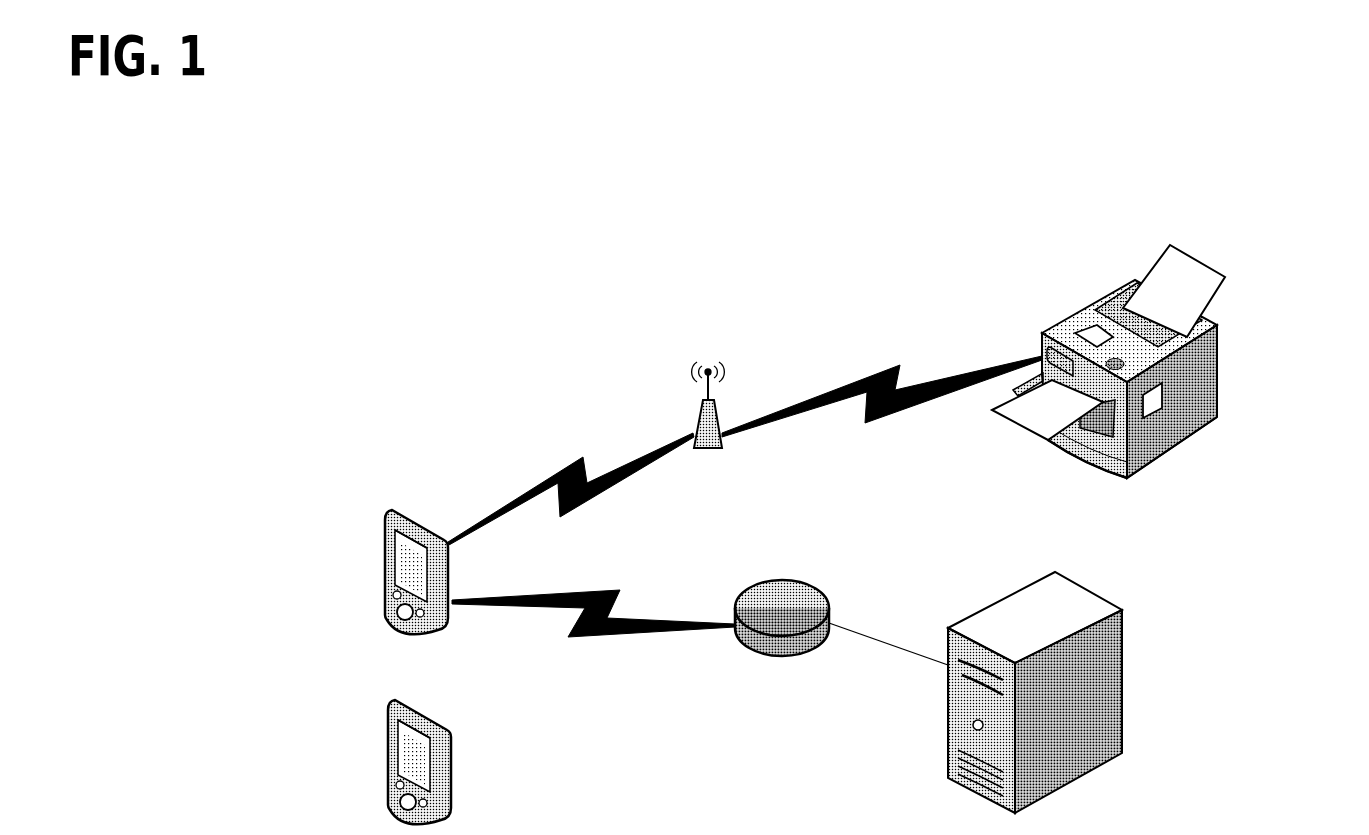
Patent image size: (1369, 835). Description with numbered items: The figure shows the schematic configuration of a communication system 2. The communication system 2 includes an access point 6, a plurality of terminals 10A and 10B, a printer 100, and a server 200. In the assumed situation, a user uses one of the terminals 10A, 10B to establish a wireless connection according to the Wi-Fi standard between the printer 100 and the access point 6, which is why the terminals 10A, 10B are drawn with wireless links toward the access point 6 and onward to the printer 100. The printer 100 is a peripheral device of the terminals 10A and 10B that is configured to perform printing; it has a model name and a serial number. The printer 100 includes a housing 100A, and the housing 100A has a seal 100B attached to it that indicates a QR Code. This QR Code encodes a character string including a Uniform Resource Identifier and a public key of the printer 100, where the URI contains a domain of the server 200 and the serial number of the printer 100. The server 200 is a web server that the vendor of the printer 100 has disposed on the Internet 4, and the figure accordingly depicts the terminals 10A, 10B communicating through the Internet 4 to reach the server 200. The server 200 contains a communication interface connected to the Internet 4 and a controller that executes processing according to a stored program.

The communication system 2 is at (472, 231).
The Internet 4 is at (795, 575).
The access point 6 is at (720, 415).
The terminal 10A is at (403, 503).
The terminal 10B is at (408, 700).
The printer 100 is at (1170, 314).
The housing 100A is at (1220, 352).
The seal 100B is at (1210, 427).
The server 200 is at (1125, 622).